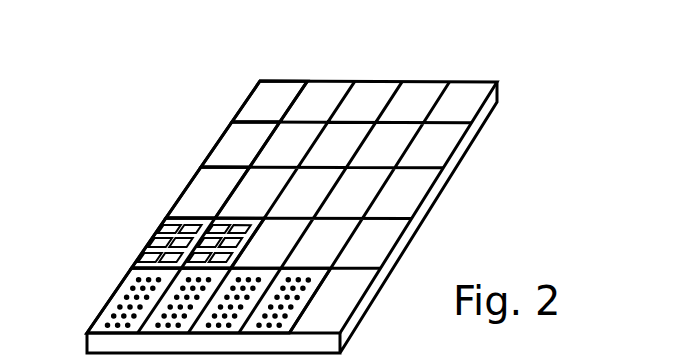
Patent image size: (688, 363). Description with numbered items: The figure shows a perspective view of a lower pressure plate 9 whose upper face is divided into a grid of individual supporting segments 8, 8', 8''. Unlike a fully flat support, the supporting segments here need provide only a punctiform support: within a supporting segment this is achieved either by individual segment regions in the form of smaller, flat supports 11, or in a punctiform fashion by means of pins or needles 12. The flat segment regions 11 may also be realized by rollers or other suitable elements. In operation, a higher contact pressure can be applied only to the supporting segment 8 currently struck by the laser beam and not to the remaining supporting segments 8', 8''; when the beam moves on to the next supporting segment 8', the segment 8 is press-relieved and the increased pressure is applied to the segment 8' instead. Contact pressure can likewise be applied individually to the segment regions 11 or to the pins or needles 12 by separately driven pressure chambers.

The supporting segment 8 is at (185, 192).
The supporting segment 8' is at (218, 141).
The supporting segment 8'' is at (247, 94).
The lower pressure plate 9 is at (465, 143).
The flat segment regions 11 is at (150, 243).
The pins or needles 12 is at (118, 300).